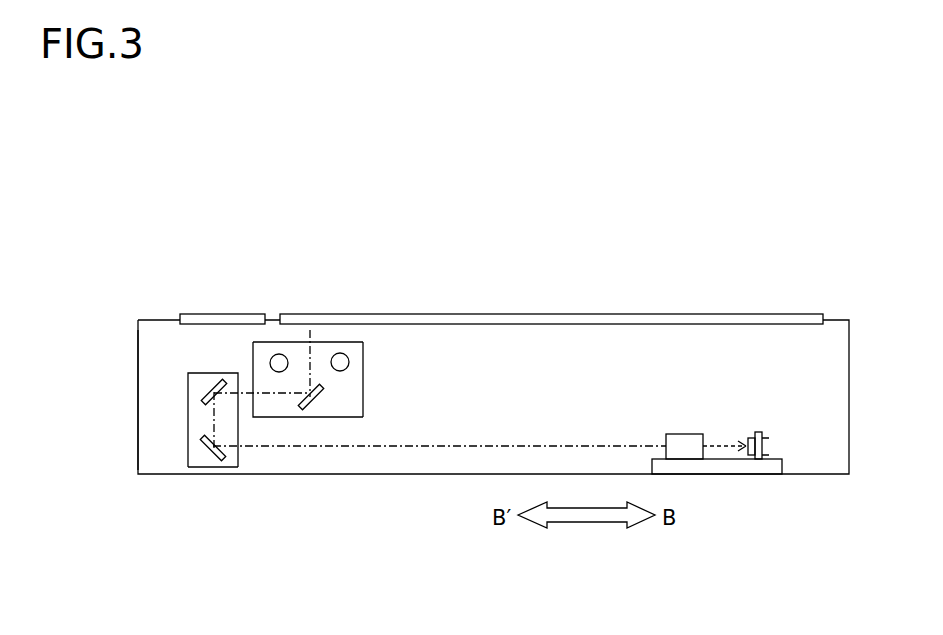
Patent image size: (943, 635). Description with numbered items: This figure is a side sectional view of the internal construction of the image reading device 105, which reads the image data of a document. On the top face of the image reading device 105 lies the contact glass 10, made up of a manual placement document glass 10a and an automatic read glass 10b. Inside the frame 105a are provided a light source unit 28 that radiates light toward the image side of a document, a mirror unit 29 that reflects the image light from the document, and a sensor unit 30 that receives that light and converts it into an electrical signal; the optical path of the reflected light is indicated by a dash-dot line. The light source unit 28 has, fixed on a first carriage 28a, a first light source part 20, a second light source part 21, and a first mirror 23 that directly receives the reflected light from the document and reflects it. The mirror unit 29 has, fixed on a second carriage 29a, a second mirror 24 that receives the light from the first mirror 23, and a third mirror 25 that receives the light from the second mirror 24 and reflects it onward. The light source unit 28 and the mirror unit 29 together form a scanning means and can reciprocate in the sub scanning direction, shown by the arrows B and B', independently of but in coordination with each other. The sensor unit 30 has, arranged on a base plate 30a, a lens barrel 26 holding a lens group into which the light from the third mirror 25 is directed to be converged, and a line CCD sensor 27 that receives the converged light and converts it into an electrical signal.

The contact glass 10 is at (501, 257).
The manual placement document glass 10a is at (323, 318).
The automatic read glass 10b is at (238, 318).
The image reading device 105 is at (722, 262).
The frame 105a is at (138, 375).
The first light source part 20 is at (270, 363).
The second light source part 21 is at (350, 362).
The first mirror 23 is at (318, 401).
The second mirror 24 is at (206, 392).
The third mirror 25 is at (207, 452).
The lens barrel 26 is at (688, 434).
The line CCD sensor 27 is at (762, 431).
The light source unit 28 is at (342, 437).
The first carriage 28a is at (363, 405).
The mirror unit 29 is at (160, 459).
The second carriage 29a is at (208, 468).
The sensor unit 30 is at (713, 416).
The base plate 30a is at (782, 462).